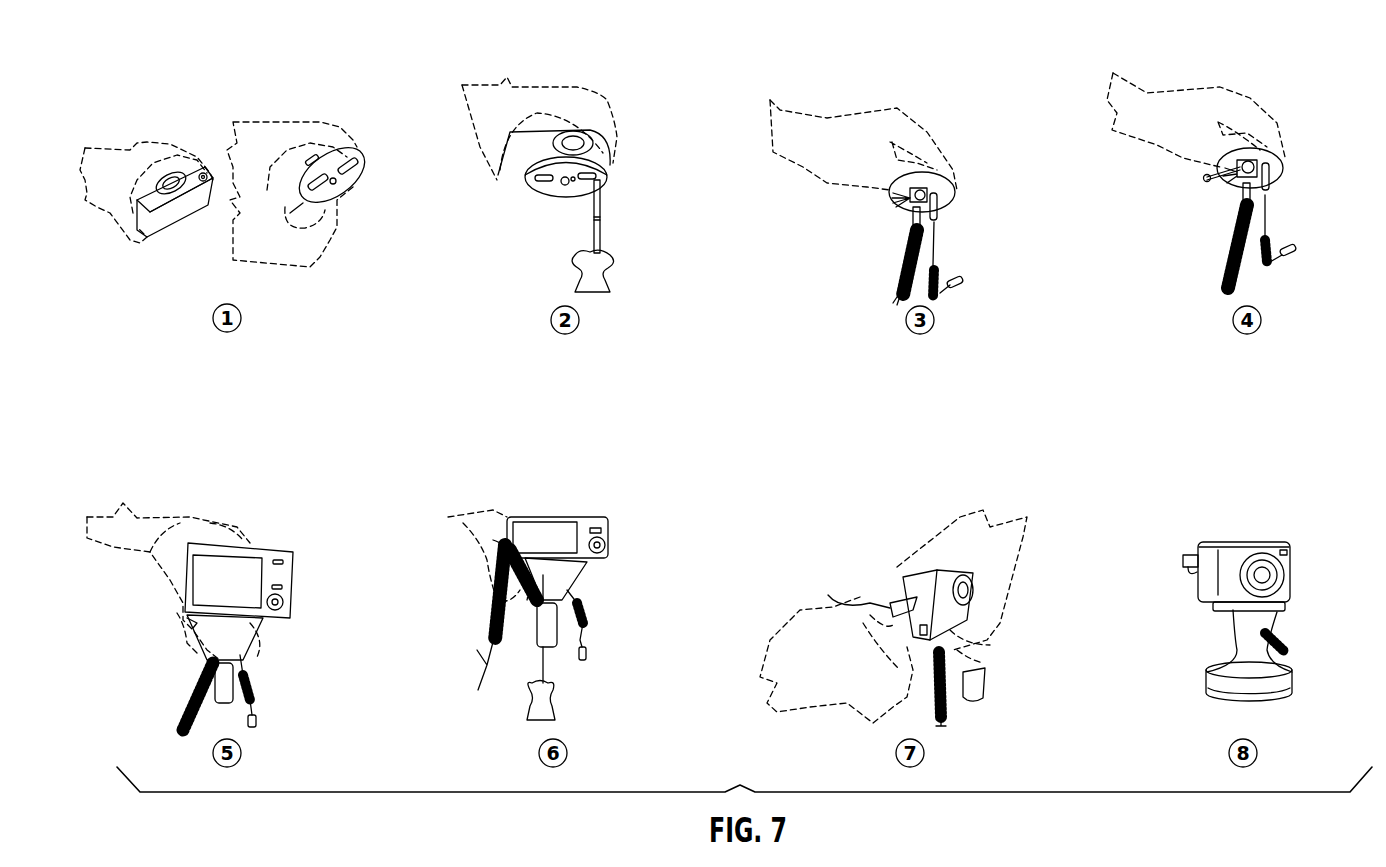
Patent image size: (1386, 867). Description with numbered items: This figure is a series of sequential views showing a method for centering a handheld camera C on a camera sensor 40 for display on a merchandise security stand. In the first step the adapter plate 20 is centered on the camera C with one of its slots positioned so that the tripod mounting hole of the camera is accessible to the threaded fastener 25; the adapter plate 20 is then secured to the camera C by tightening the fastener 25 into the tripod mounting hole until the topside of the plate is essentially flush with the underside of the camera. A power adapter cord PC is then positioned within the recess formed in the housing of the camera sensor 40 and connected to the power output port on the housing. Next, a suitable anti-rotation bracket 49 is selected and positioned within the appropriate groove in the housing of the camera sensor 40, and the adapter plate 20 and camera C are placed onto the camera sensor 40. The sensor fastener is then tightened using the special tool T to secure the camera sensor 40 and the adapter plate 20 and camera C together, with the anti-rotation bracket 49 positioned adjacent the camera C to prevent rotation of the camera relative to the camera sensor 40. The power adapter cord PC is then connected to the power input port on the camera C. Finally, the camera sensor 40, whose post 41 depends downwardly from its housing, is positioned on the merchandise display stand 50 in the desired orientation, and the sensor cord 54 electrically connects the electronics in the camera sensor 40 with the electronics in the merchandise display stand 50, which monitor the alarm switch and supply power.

The adapter plate 20 is at (327, 160).
The threaded fastener 25 is at (603, 180).
The camera sensor 40 is at (957, 188).
The post 41 is at (980, 690).
The anti-rotation bracket 49 is at (1205, 180).
The merchandise display stand 50 is at (1295, 683).
The sensor cord 54 is at (905, 262).
The camera C is at (173, 214).
The power adapter cord PC is at (933, 257).
The special tool T is at (612, 263).